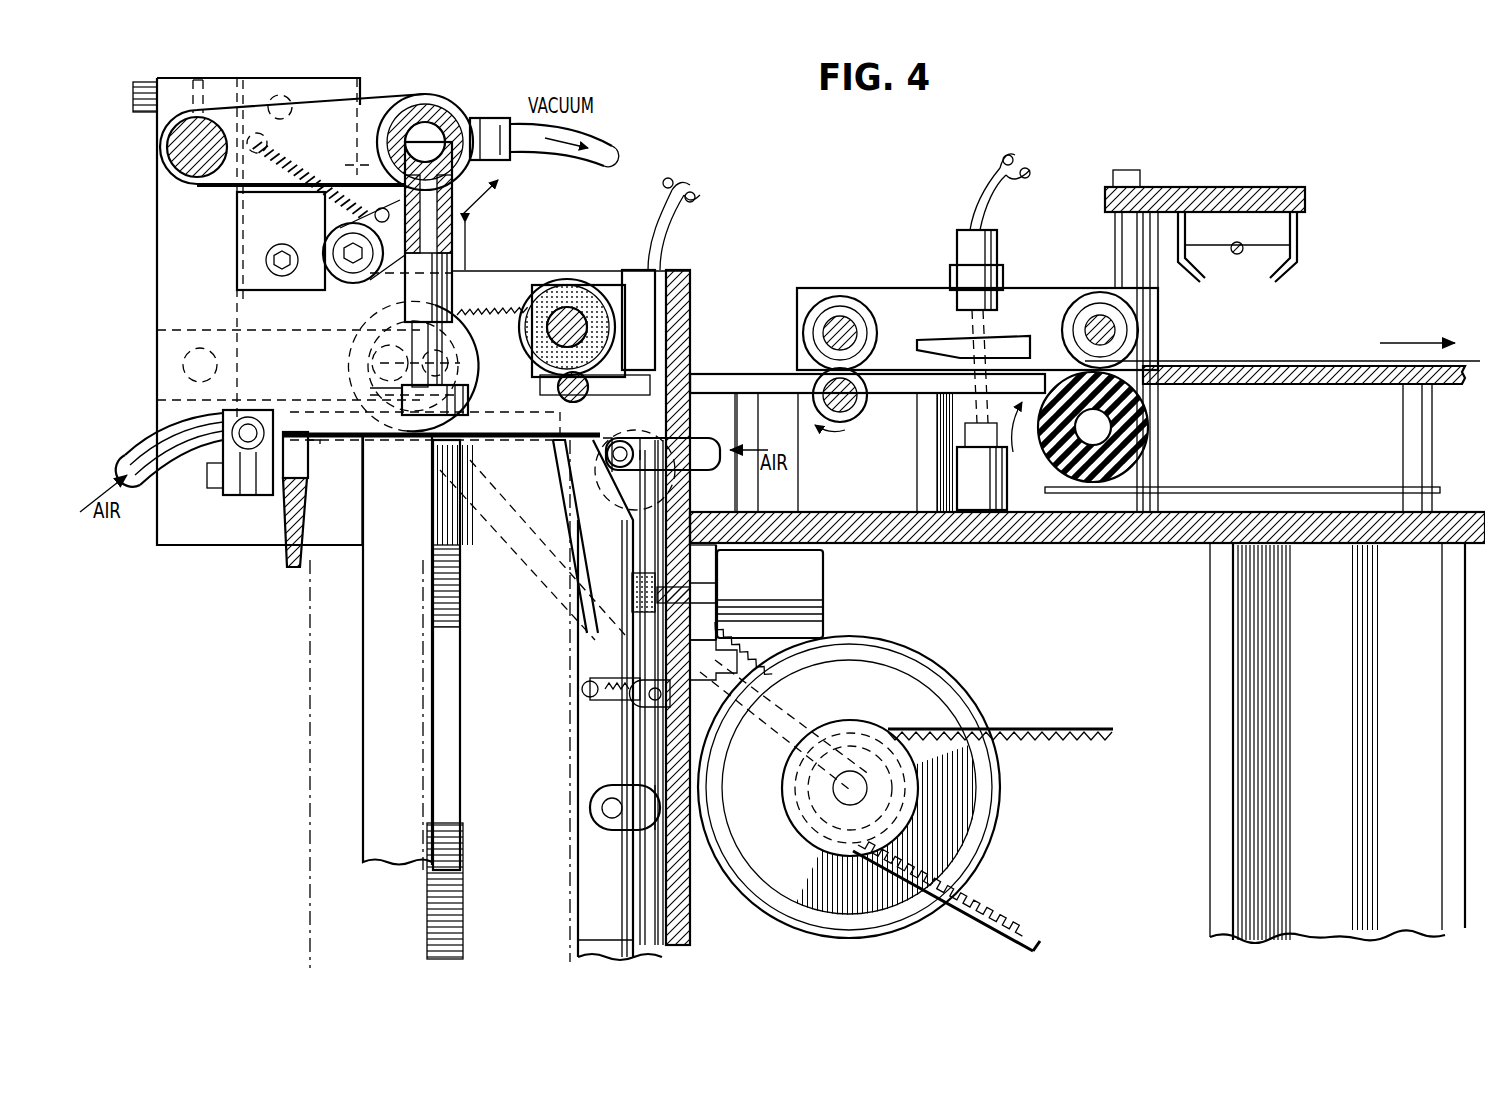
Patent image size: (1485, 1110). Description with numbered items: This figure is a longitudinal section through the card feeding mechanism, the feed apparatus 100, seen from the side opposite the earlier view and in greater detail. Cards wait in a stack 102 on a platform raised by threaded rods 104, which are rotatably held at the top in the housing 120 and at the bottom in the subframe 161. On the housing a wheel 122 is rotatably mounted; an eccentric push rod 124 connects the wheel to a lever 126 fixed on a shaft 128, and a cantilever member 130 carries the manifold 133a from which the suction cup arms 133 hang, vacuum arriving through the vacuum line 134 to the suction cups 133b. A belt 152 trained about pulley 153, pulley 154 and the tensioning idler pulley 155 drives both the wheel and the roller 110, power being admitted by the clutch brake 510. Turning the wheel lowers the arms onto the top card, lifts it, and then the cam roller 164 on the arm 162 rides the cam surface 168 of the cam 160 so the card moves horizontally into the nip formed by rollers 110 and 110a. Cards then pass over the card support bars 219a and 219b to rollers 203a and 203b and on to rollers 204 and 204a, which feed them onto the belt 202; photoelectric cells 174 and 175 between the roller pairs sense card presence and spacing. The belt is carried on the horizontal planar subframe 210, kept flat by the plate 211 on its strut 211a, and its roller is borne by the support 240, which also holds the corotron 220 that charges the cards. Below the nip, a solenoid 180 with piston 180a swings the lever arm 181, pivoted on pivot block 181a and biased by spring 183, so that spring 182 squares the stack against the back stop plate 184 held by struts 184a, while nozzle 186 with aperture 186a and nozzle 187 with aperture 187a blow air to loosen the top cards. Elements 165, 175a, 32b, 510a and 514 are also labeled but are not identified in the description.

The feed apparatus 100 is at (178, 204).
The stack of cards 102 is at (315, 666).
The threaded rods 104 is at (462, 578).
The roller 110 is at (570, 300).
The roller 110a is at (560, 393).
The housing 120 is at (178, 520).
The wheel 122 is at (380, 372).
The push rod 124 is at (170, 347).
The lever 126 is at (185, 274).
The shaft 128 is at (178, 148).
The cantilever member 130 is at (350, 100).
The suction cup arms 133 is at (447, 292).
The manifold 133a is at (440, 118).
The suction cups 133b is at (410, 420).
The vacuum line 134 is at (590, 143).
The belt 152 is at (495, 300).
The pulley 153 is at (372, 347).
The pulley 154 is at (575, 290).
The tensioning idler pulley 155 is at (686, 493).
The cam 160 is at (248, 252).
The subframe 161 is at (600, 910).
The arm 162 is at (345, 218).
The cam roller 164 is at (335, 231).
The column 165 is at (372, 725).
The cam surface 168 is at (372, 272).
The photoelectric cell 174 is at (672, 300).
The photoelectric cell 175 is at (962, 238).
The nozzle collar 175a is at (952, 274).
The solenoid 180 is at (825, 583).
The piston 180a is at (700, 583).
The lever arm 181 is at (608, 748).
The pivot block 181a is at (652, 830).
The spring 182 is at (585, 600).
The spring 183 is at (605, 668).
The back stop plate 184 is at (290, 562).
The struts 184a is at (345, 452).
The nozzle 186 is at (140, 452).
The aperture 186a is at (262, 425).
The nozzle 187 is at (693, 448).
The aperture 187a is at (597, 477).
The belt 202 is at (1355, 366).
The roller 203a is at (830, 300).
The roller 203b is at (845, 435).
The roller 204 is at (1145, 425).
The roller 204a is at (1140, 325).
The horizontal planar subframe 210 is at (1322, 528).
The plate 211 is at (1293, 386).
The strut 211a is at (1405, 424).
The card support bar 219a is at (770, 374).
The card support bar 219b is at (888, 372).
The corotron 220 is at (1298, 236).
The support 240 is at (1040, 290).
The frame column 32b is at (1210, 640).
The clutch brake 510 is at (945, 672).
The pulley hub 510a is at (915, 802).
The timing belt 514 is at (1030, 730).